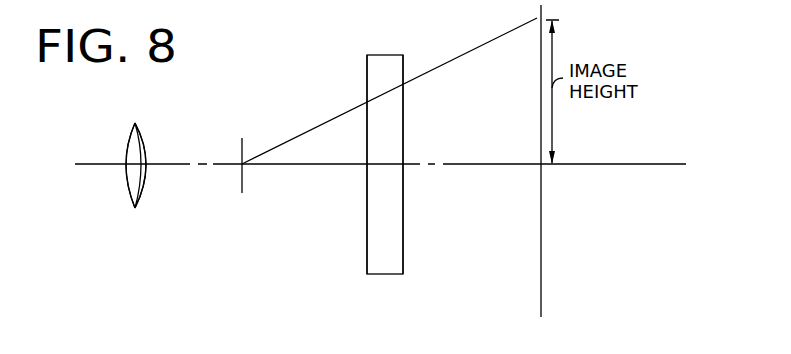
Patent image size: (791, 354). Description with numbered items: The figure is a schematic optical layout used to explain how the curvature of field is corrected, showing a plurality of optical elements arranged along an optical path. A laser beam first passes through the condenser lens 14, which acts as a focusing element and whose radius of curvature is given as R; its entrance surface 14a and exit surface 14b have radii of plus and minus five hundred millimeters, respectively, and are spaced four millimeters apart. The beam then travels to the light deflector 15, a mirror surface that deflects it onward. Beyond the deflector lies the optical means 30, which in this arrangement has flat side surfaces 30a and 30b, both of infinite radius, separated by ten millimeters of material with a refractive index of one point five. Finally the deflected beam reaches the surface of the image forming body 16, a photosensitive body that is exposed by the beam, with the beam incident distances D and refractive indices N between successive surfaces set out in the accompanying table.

The condenser lens 14 is at (137, 148).
The first surface of condenser lens 14a is at (126, 160).
The second surface of condenser lens 14b is at (146, 185).
The light deflector 15 is at (242, 153).
The optical means 30 is at (388, 274).
The flat side surface of optical means 30a is at (367, 78).
The flat side surface of optical means 30b is at (403, 245).
The image forming body 16 is at (571, 161).